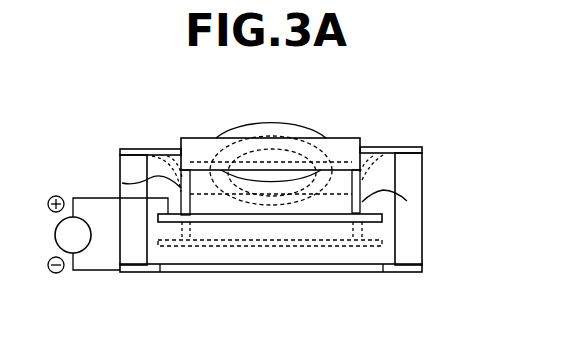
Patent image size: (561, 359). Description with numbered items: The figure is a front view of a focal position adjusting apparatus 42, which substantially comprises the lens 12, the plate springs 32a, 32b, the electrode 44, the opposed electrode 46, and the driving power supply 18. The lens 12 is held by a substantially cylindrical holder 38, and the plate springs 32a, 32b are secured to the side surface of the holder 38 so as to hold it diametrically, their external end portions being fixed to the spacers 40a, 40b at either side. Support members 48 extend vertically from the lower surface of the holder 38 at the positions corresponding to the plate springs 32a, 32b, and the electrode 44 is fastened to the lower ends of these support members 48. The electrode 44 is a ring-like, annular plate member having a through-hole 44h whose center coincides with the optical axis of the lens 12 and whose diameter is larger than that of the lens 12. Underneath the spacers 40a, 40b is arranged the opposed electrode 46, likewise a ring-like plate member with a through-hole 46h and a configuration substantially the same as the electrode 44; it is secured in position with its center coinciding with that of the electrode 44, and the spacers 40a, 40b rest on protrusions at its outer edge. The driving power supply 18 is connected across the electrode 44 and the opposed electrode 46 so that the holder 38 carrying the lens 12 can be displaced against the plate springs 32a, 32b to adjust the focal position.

The lens 12 is at (277, 125).
The driving power supply 18 is at (85, 246).
The plate spring 32a is at (129, 150).
The plate spring 32b is at (393, 148).
The holder 38 is at (195, 140).
The spacer 40a is at (123, 168).
The spacer 40b is at (412, 172).
The focal position adjusting apparatus 42 is at (286, 192).
The electrode 44 is at (364, 222).
The through-hole 44h is at (288, 228).
The opposed electrode 46 is at (180, 274).
The through-hole 46h is at (238, 275).
The support member 48 is at (122, 183).